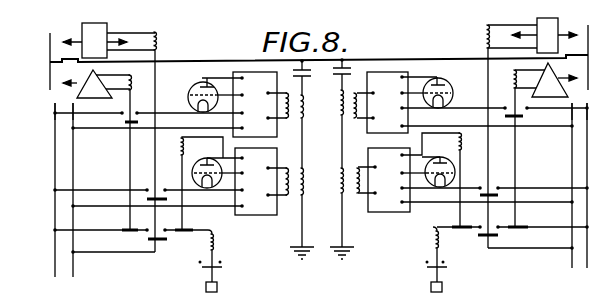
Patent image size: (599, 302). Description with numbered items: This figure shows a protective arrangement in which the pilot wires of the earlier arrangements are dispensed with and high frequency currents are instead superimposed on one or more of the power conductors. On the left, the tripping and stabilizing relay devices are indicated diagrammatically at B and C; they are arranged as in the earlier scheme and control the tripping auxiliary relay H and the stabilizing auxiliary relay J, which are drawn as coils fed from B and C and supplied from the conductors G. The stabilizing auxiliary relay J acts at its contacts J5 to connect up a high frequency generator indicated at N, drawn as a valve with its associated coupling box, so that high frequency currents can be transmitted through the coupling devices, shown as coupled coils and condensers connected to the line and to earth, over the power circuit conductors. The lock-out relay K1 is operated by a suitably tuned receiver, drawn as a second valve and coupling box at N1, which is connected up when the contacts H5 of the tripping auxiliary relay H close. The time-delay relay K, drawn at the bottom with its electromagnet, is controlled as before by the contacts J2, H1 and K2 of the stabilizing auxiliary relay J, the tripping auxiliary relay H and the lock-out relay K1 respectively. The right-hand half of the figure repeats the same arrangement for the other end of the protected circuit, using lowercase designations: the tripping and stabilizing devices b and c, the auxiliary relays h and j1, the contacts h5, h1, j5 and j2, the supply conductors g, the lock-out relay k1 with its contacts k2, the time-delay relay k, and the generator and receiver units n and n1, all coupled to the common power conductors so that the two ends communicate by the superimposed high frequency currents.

The tripping relay device B is at (95, 40).
The stabilizing relay device C is at (87, 85).
The tripping auxiliary relay H is at (160, 36).
The contacts of the tripping auxiliary relay H5 is at (147, 197).
The contacts of the tripping auxiliary relay H1 is at (155, 252).
The stabilizing auxiliary relay J is at (134, 150).
The contacts of the stabilizing auxiliary relay J5 is at (122, 123).
The contacts of the stabilizing auxiliary relay J2 is at (132, 232).
The supply conductors (left) G is at (55, 163).
The lock-out relay K1 is at (180, 139).
The contacts of the lock-out relay K2 is at (182, 232).
The time-delay relay K is at (217, 244).
The high frequency generator N is at (243, 74).
The tuned receiver N1 is at (245, 215).
The transmitter unit (right station) b is at (544, 35).
The receiver unit (right station) c is at (554, 80).
The relay h is at (483, 35).
The contact of relay h h5 is at (500, 194).
The contact of relay h h1 is at (488, 248).
The relay j j1 is at (510, 78).
The contact of relay j j5 is at (522, 118).
The contact of relay j j2 is at (518, 229).
The supply conductors (right) g is at (587, 154).
The relay k1 is at (462, 133).
The contact of relay k1 k2 is at (462, 229).
The electromagnet / sounder k is at (432, 238).
The amplifier n (tube and coupling box) n is at (433, 82).
The amplifier n1 (tube and coupling box) n1 is at (433, 185).